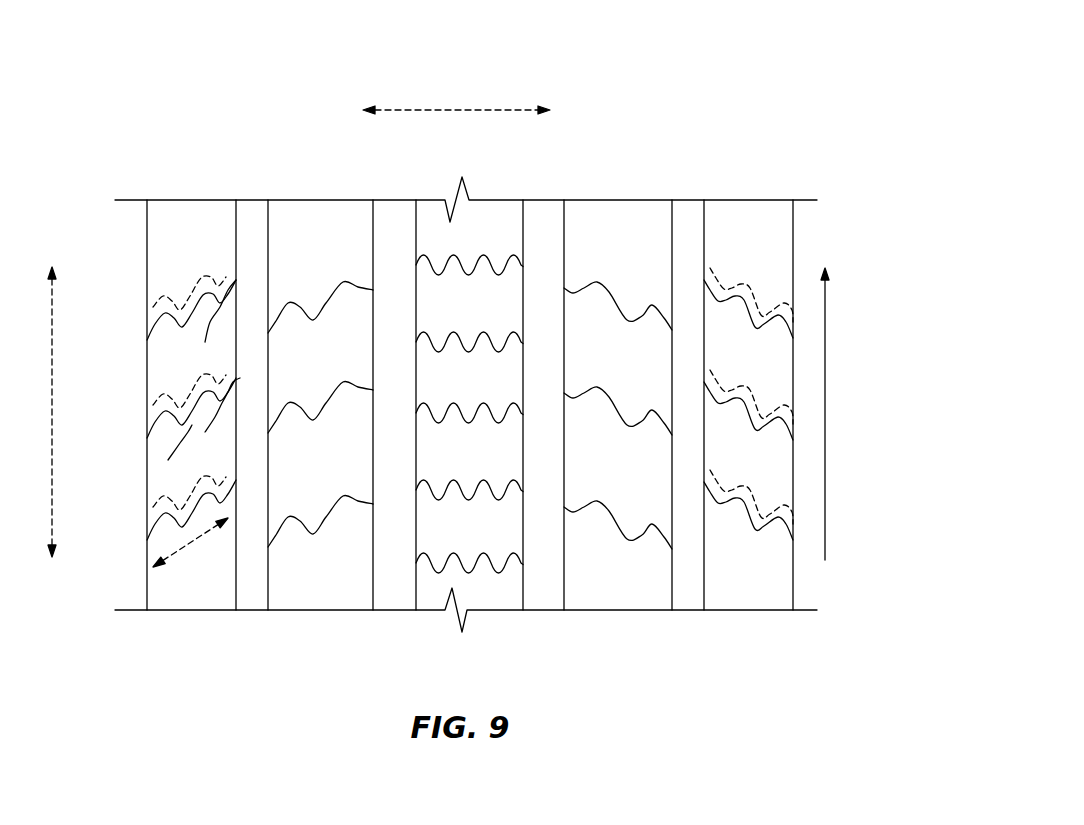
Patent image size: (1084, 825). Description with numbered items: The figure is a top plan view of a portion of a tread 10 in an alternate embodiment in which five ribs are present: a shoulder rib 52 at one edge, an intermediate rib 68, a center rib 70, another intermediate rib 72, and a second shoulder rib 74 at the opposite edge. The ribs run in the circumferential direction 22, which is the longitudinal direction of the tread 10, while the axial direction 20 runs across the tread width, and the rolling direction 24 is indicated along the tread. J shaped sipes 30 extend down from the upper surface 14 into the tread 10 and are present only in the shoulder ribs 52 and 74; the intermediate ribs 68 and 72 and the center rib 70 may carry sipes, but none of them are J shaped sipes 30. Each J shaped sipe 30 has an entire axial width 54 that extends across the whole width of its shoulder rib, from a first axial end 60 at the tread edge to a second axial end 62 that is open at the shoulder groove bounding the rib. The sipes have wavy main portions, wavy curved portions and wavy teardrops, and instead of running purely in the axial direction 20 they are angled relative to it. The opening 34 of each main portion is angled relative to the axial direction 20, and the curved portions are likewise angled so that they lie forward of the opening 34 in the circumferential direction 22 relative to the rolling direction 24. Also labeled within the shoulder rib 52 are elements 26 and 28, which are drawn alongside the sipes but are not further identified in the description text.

The tread 10 is at (775, 118).
The upper surface 14 is at (745, 214).
The axial direction 20 is at (457, 112).
The circumferential direction 22 is at (51, 412).
The rolling direction 24 is at (841, 414).
The first fibers 26 is at (207, 290).
The second fibers 28 is at (213, 330).
The J shaped sipe 30 is at (191, 504).
The opening 34 is at (196, 446).
The shoulder rib 52 is at (150, 262).
The entire axial width 54 is at (177, 553).
The first axial end 60 is at (148, 437).
The second axial end 62 is at (240, 378).
The intermediate rib 68 is at (320, 440).
The center rib 70 is at (469, 440).
The intermediate rib 72 is at (618, 441).
The shoulder rib 74 is at (748, 441).